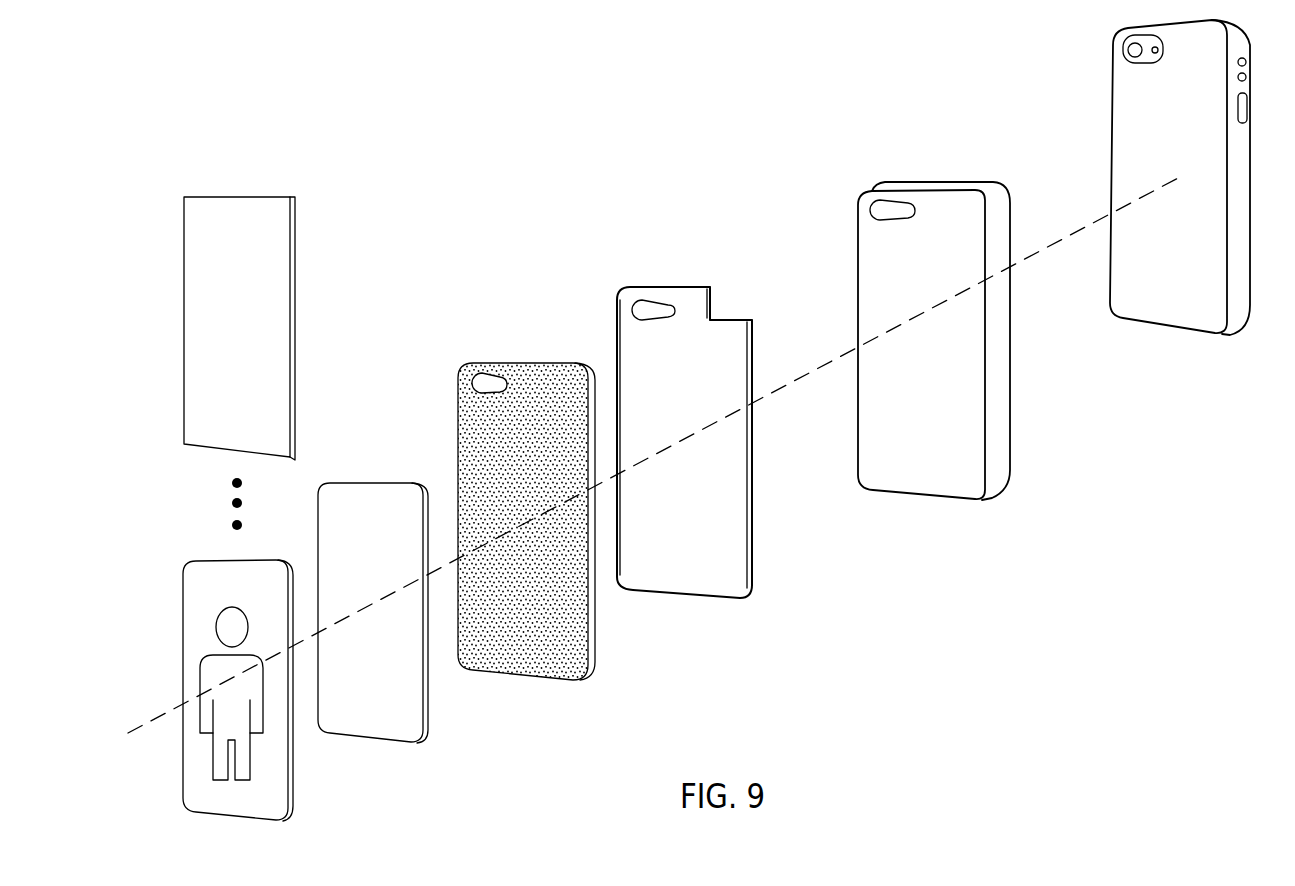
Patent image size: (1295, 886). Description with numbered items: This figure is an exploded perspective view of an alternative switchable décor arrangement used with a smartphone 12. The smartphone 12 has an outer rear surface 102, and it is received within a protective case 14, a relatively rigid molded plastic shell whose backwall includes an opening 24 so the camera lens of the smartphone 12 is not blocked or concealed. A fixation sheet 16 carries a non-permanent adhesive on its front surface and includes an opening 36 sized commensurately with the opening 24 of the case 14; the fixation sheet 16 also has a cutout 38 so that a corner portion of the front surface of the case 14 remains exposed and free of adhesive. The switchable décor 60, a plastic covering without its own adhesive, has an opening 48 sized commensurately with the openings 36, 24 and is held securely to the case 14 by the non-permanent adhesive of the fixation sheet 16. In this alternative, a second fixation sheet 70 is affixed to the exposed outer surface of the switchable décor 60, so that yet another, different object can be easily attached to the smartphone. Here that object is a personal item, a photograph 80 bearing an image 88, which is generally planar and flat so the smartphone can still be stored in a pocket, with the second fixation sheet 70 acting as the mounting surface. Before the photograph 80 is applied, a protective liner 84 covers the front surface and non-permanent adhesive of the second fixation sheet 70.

The smartphone 12 is at (1192, 200).
The outer rear surface 102 is at (1195, 268).
The protective case 14 is at (944, 337).
The opening 24 is at (882, 206).
The fixation sheet 16 is at (703, 438).
The opening 36 is at (642, 300).
The cutout 38 is at (732, 308).
The switchable décor 60 is at (540, 508).
The opening 48 is at (480, 373).
The second fixation sheet 70 is at (413, 743).
The photograph 80 is at (277, 807).
The image 88 is at (212, 673).
The protective liner 84 is at (287, 237).